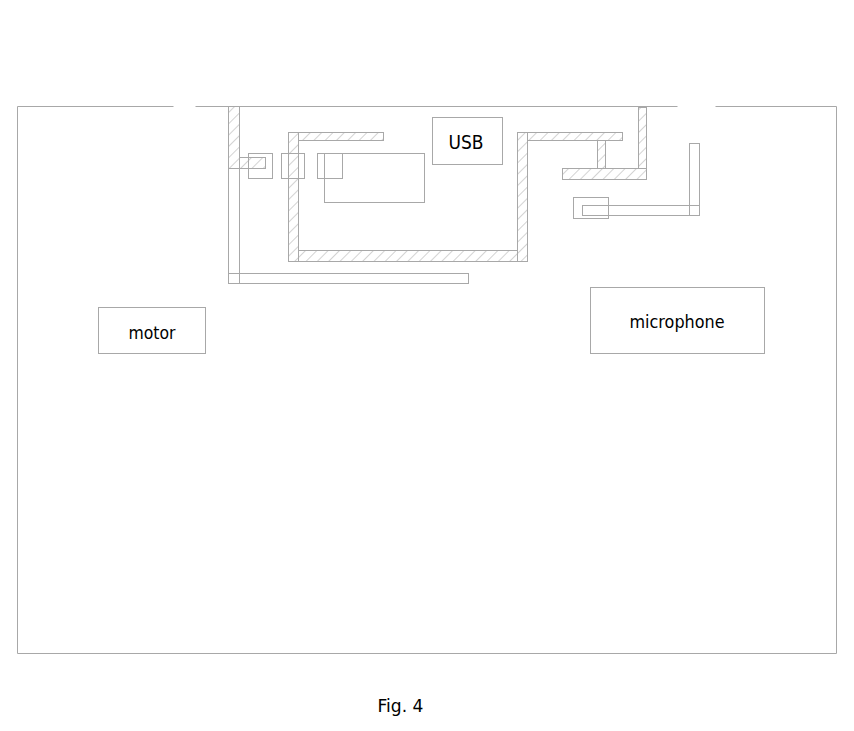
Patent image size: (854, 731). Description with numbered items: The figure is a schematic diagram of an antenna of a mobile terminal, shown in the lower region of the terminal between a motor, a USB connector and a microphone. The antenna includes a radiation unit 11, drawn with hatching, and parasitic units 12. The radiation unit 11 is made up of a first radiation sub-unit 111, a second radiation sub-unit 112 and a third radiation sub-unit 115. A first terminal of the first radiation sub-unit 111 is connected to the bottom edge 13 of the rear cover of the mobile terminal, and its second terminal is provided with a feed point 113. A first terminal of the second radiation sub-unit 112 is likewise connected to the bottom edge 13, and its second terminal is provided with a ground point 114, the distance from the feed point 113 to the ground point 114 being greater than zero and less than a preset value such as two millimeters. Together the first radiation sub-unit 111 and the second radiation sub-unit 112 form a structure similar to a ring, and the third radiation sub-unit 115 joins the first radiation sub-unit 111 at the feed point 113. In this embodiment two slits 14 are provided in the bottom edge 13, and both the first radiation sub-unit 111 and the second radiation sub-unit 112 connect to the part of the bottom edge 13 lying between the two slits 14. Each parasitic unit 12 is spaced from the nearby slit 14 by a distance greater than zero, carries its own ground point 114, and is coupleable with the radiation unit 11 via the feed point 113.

The radiation unit 11 is at (538, 132).
The first radiation sub-unit 111 is at (587, 132).
The second radiation sub-unit 112 is at (228, 134).
The feed point 113 is at (281, 153).
The ground point 114 is at (330, 154).
The third radiation sub-unit 115 is at (317, 150).
The parasitic unit 12 is at (228, 213).
The bottom edge 13 is at (272, 107).
The slit 14 is at (184, 109).